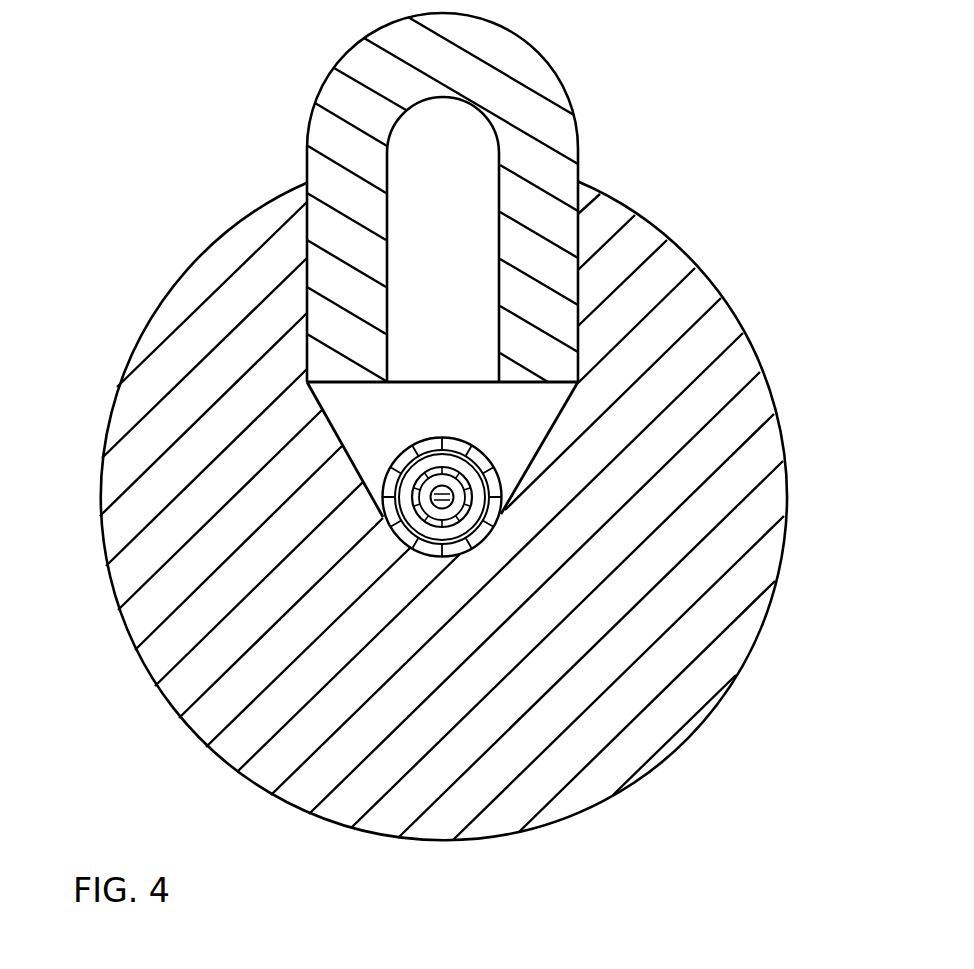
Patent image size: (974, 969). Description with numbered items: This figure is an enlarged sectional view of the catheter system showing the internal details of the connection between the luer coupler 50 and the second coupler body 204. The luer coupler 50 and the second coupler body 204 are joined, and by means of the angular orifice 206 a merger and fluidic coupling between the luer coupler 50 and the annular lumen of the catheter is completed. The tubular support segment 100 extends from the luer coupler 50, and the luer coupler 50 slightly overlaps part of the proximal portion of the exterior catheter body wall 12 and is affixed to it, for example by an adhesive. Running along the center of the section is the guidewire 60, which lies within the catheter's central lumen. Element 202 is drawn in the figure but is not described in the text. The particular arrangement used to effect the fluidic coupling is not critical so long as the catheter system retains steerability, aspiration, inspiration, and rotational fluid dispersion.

The tubular support segment 100 is at (482, 426).
The second coupler body 204 is at (715, 500).
The luer coupler 50 is at (578, 120).
The angular orifice 206 is at (475, 225).
The exterior catheter body wall 12 is at (615, 575).
The hub 202 is at (457, 493).
The guidewire 60 is at (442, 502).